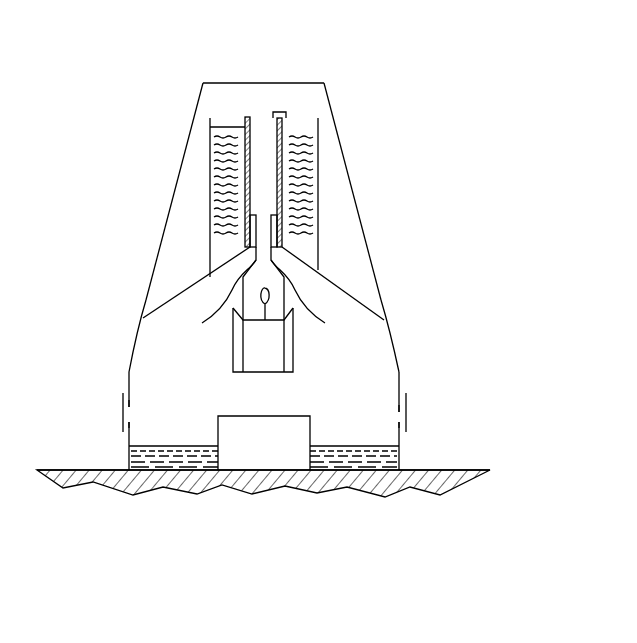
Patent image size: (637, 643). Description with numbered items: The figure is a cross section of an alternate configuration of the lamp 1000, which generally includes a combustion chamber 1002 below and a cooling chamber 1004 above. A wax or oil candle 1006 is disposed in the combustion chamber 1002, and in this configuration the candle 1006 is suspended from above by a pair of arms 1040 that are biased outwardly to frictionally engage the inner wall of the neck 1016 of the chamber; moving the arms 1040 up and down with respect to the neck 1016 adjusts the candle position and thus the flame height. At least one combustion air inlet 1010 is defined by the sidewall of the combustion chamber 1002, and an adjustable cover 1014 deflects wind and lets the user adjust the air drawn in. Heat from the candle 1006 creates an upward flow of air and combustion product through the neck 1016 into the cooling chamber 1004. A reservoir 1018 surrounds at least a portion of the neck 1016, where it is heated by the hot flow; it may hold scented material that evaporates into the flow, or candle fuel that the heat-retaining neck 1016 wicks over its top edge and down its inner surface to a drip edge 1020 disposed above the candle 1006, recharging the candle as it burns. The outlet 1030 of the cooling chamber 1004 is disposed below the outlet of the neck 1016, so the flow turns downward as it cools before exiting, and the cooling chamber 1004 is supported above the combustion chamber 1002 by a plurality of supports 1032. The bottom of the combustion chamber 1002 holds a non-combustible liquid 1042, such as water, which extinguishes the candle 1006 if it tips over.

The lamp 1000 is at (412, 120).
The combustion chamber 1002 is at (405, 364).
The cooling chamber 1004 is at (374, 233).
The candle 1006 is at (260, 356).
The combustion air inlet 1010 is at (398, 412).
The adjustable cover 1014 is at (408, 413).
The neck 1016 is at (245, 118).
The reservoir 1018 is at (213, 165).
The drip edge 1020 is at (230, 257).
The outlet 1030 is at (138, 332).
The supports 1032 is at (317, 90).
The arms 1040 is at (264, 306).
The liquid 1042 is at (130, 460).